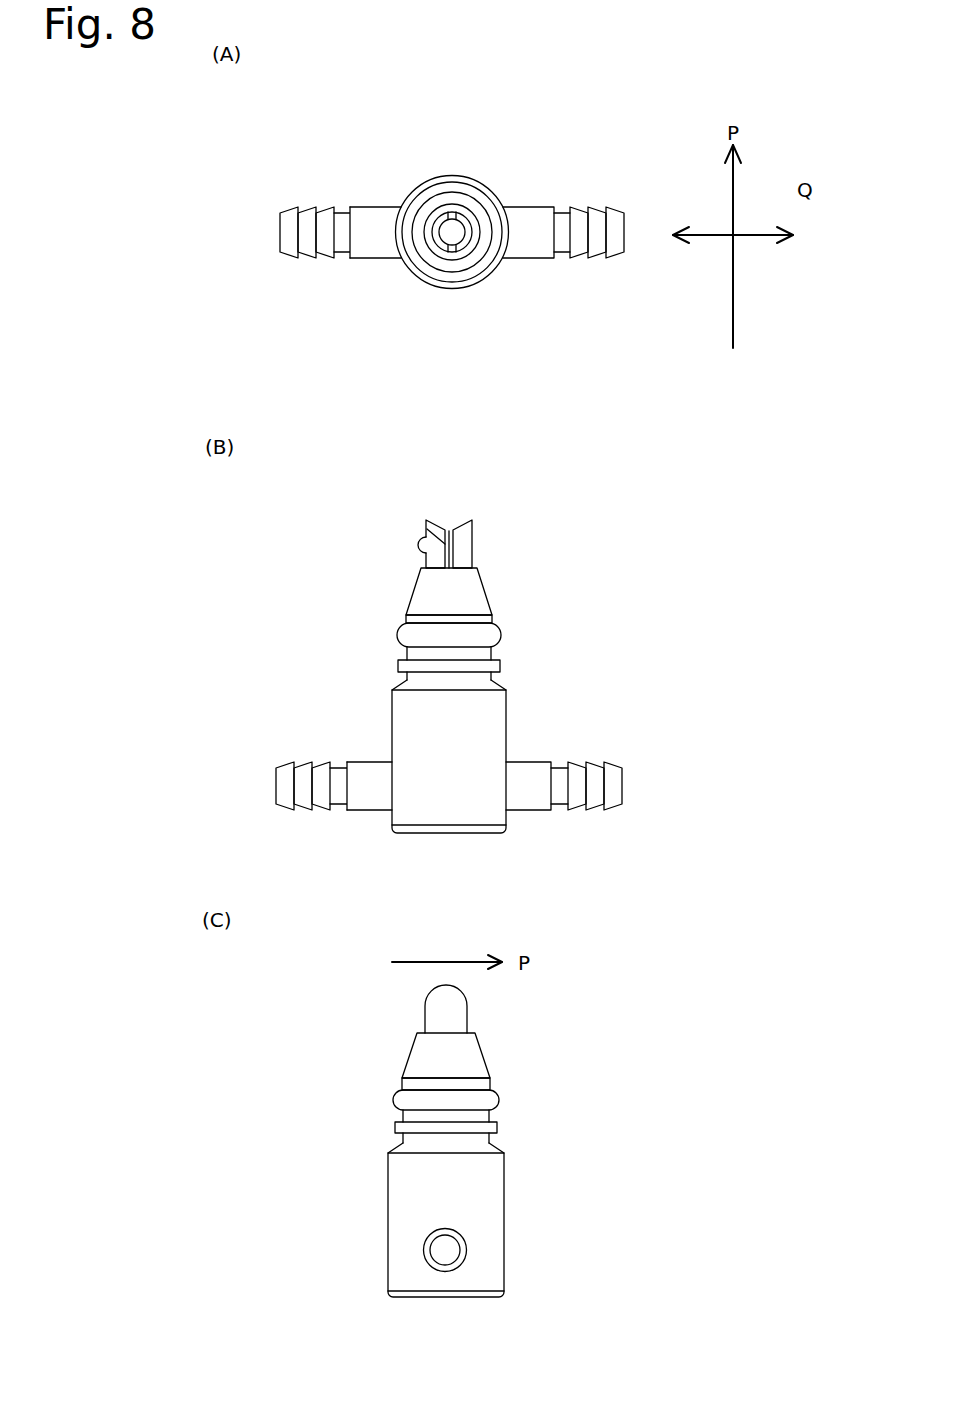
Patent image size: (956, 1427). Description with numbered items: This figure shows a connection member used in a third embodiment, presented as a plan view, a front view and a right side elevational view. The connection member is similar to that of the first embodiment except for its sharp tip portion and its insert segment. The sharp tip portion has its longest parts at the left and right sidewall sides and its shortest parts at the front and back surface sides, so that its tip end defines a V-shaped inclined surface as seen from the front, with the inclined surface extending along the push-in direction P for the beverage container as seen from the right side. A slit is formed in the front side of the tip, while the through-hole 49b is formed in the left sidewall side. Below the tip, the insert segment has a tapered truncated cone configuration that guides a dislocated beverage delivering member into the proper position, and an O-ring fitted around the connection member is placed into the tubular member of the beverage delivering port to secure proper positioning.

The through-hole 49b is at (433, 549).